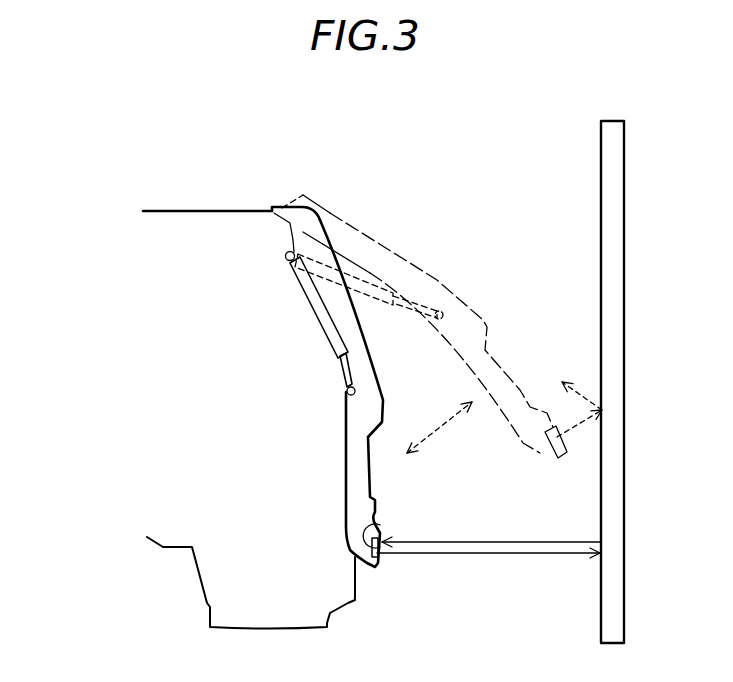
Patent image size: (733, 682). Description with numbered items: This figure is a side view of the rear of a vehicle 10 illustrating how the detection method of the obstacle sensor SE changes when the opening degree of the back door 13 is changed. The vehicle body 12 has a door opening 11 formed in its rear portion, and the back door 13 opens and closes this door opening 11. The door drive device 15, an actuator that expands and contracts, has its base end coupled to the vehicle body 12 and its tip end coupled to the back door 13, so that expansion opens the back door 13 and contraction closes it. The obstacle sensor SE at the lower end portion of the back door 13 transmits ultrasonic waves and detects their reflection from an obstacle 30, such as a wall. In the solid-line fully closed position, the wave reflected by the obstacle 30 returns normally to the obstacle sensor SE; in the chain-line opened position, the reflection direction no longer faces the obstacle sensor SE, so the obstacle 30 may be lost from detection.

The vehicle 10 is at (100, 127).
The door opening 11 is at (343, 467).
The vehicle body 12 is at (207, 210).
The back door 13 is at (330, 208).
The door drive device 15 is at (312, 303).
The obstacle sensor SE is at (383, 523).
The obstacle 30 is at (626, 588).